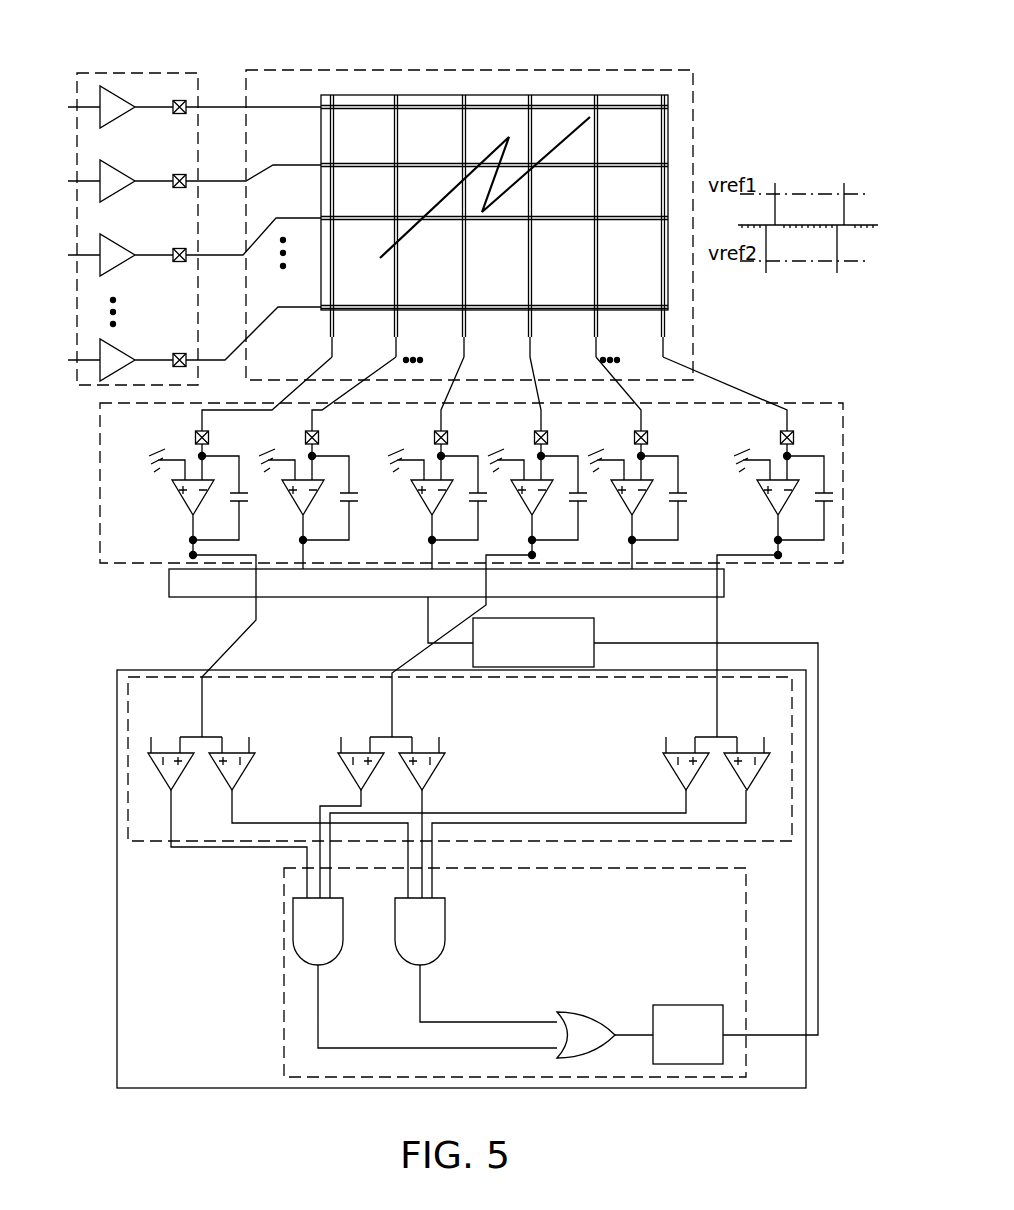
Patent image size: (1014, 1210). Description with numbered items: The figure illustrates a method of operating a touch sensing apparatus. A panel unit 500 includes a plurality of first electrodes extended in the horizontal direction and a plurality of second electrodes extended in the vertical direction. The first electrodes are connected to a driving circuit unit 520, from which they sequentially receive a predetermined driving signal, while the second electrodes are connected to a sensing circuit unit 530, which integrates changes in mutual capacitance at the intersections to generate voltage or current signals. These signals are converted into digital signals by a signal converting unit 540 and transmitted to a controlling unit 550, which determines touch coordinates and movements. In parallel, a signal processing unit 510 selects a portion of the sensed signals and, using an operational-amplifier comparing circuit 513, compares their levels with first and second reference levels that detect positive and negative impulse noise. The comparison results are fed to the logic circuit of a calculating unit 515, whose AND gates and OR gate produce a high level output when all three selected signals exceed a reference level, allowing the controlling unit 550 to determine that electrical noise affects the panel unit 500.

The panel unit 500 is at (696, 73).
The signal processing unit 510 is at (117, 949).
The comparing circuit 513 is at (794, 760).
The calculating unit 515 is at (748, 1068).
The driving circuit unit 520 is at (137, 72).
The sensing circuit unit 530 is at (812, 401).
The signal converting unit 540 is at (726, 585).
The controlling unit 550 is at (596, 626).